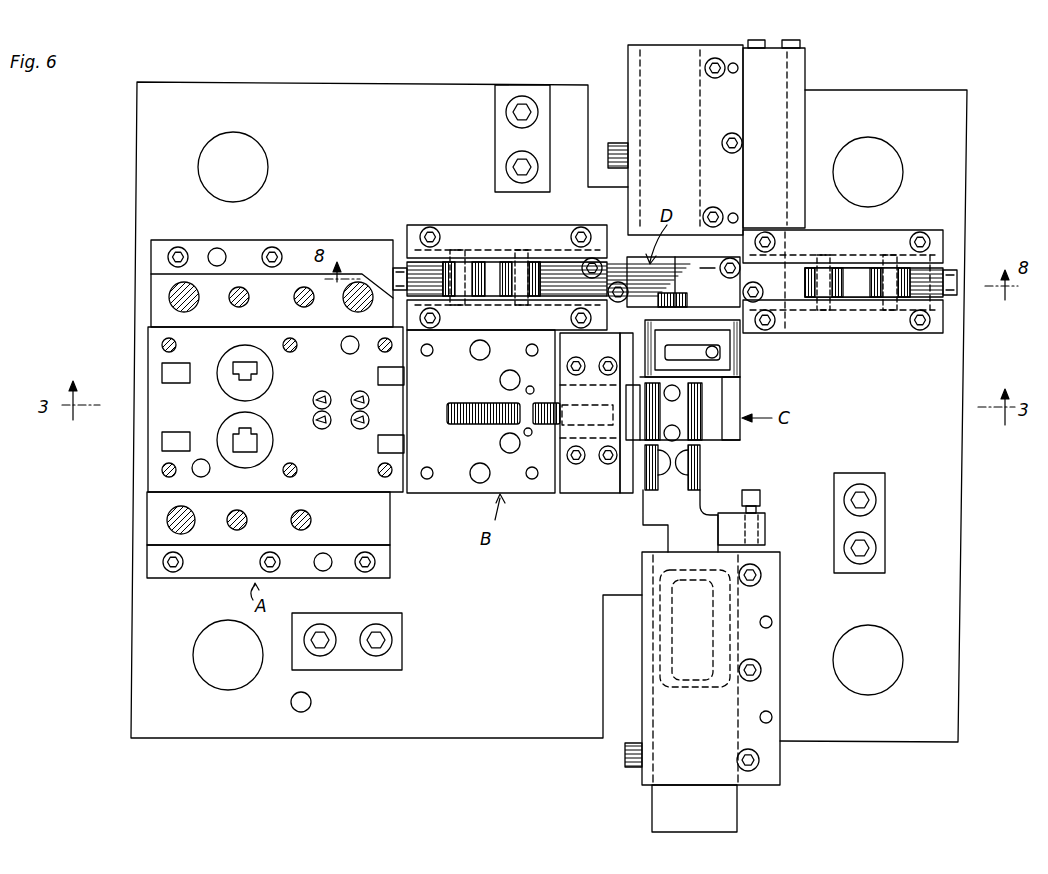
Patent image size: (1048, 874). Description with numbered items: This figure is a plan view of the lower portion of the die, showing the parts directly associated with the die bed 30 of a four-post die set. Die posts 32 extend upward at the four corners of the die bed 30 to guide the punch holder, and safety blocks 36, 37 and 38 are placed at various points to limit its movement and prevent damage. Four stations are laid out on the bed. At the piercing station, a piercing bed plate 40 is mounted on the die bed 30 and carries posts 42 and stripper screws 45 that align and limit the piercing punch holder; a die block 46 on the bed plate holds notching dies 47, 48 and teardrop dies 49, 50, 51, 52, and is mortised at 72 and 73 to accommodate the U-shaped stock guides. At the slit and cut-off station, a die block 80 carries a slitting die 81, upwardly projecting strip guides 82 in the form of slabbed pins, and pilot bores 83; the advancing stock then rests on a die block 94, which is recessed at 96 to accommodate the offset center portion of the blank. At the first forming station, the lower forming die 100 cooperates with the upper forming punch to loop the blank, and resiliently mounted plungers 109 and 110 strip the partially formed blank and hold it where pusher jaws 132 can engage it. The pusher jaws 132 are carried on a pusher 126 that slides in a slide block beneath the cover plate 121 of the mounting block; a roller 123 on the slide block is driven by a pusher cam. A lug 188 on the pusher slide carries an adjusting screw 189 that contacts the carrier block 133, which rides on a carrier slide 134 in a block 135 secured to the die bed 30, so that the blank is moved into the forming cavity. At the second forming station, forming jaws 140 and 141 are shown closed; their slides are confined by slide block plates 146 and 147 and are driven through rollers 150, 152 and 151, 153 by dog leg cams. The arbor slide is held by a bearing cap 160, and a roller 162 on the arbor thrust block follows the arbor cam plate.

The die bed 30 is at (145, 622).
The die posts 32 is at (258, 176).
The safety block 36 is at (366, 668).
The safety block 37 is at (880, 513).
The safety block 38 is at (497, 144).
The piercing bed plate 40 is at (384, 534).
The posts 42 is at (192, 520).
The stripper screws 45 is at (296, 514).
The die block 46 is at (148, 475).
The notching die 47 is at (234, 352).
The notching die 48 is at (232, 462).
The teardrop die 49 is at (322, 391).
The teardrop die 50 is at (322, 429).
The teardrop die 51 is at (360, 391).
The teardrop die 52 is at (360, 429).
The mortise 72 is at (168, 431).
The mortise 73 is at (389, 386).
The die block 80 is at (452, 493).
The slitting die 81 is at (466, 400).
The strip guides 82 is at (512, 370).
The pilot bores 83 is at (532, 389).
The die block 94 is at (600, 493).
The recess 96 is at (545, 426).
The lower forming die 100 is at (735, 425).
The plunger 109 is at (682, 436).
The plunger 110 is at (682, 393).
The cover plate 121 is at (780, 700).
The roller 123 is at (630, 765).
The pusher 126 is at (680, 535).
The pusher jaws 132 is at (675, 490).
The carrier block 133 is at (730, 360).
The carrier slide 134 is at (742, 349).
The block 135 is at (805, 74).
The forming jaw 140 is at (618, 255).
The forming jaw 141 is at (712, 275).
The slide block plate 146 is at (410, 232).
The slide block plate 147 is at (940, 245).
The roller 150 is at (463, 268).
The roller 151 is at (826, 282).
The roller 152 is at (525, 268).
The roller 153 is at (888, 282).
The bearing cap 160 is at (627, 58).
The roller 162 is at (615, 142).
The lug 188 is at (765, 528).
The adjusting screw 189 is at (760, 496).